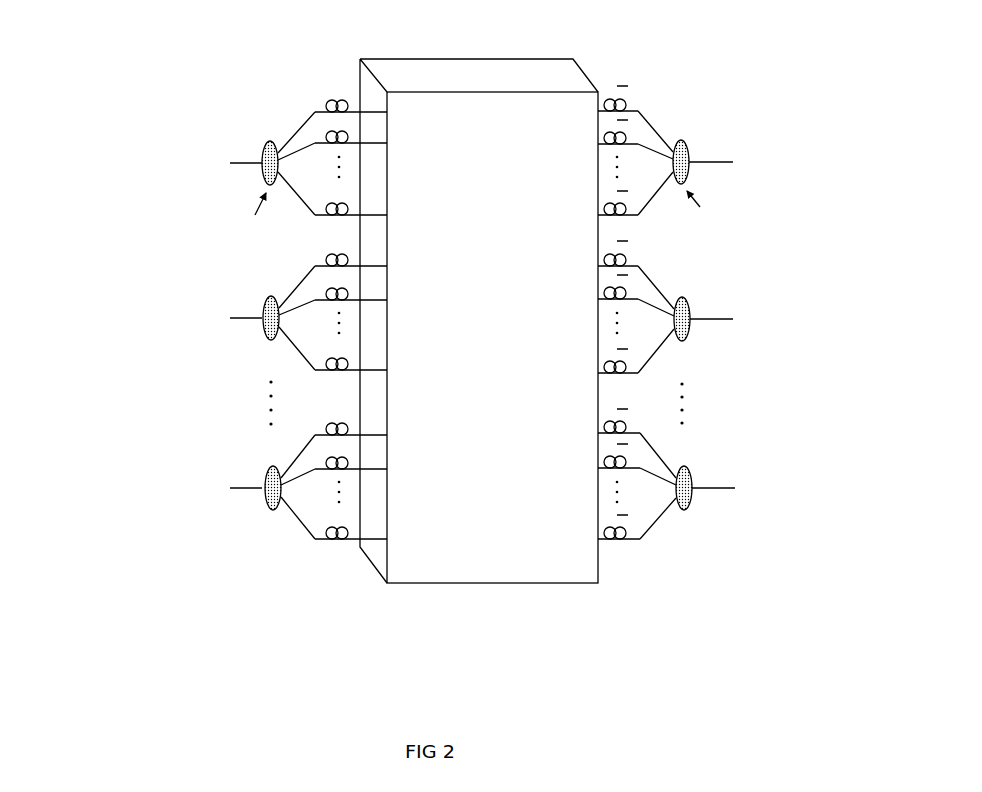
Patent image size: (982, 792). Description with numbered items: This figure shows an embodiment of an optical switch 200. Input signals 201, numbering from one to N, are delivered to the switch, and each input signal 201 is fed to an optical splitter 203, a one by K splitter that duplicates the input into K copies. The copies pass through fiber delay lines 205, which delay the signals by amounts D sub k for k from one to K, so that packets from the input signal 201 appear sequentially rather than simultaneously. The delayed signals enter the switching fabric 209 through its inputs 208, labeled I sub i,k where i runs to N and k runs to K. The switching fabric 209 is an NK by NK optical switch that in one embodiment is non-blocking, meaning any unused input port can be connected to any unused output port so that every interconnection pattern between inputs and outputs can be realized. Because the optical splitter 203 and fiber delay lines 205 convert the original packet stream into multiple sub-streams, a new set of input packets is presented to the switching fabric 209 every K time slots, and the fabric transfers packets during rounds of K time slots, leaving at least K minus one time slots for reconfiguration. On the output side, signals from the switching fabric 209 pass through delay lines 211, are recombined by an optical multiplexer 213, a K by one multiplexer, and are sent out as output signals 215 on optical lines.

The optical switch 200 is at (430, 295).
The input signals 201 is at (207, 158).
The optical splitter 203 is at (267, 149).
The fiber delay lines 205 is at (335, 98).
The inputs 208 is at (438, 551).
The switching fabric 209 is at (499, 83).
The delay lines 211 is at (608, 97).
The optical multiplexer 213 is at (683, 148).
The output signals 215 is at (756, 156).